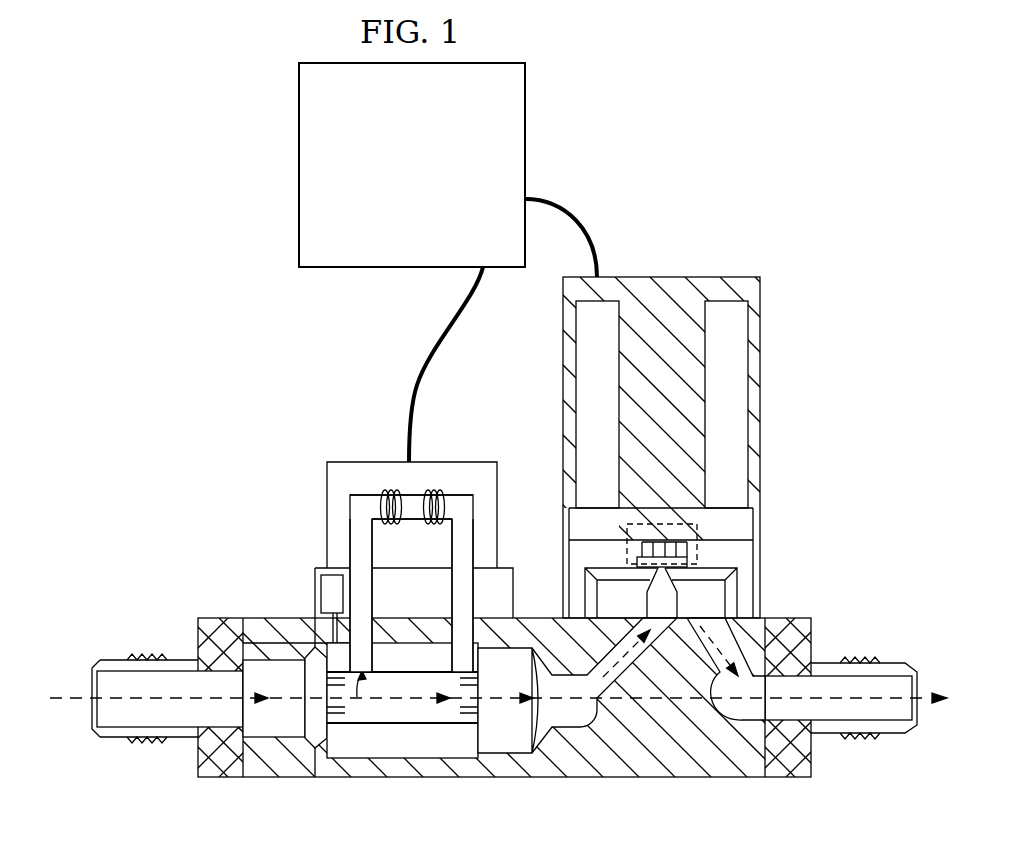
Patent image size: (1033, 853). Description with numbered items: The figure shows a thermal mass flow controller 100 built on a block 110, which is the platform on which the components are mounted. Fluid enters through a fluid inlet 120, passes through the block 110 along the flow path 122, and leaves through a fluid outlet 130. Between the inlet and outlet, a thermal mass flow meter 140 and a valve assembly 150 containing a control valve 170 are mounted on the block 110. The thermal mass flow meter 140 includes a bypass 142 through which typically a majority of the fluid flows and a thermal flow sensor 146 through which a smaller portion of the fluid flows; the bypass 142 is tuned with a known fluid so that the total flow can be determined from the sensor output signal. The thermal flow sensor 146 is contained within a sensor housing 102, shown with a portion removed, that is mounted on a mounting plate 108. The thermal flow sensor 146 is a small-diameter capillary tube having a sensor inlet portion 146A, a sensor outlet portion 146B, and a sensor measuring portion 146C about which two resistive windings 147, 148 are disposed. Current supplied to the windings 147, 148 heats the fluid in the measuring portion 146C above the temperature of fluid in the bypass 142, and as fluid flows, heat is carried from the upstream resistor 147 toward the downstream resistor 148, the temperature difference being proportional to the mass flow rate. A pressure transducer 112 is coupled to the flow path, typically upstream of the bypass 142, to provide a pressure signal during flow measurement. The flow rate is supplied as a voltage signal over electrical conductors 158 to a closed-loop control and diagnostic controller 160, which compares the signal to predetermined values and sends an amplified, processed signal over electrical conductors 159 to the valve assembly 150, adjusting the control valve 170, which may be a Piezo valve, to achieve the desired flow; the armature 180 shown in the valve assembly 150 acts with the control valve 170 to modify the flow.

The thermal mass flow controller 100 is at (772, 147).
The sensor housing 102 is at (326, 548).
The mounting plate 108 is at (315, 594).
The block 110 is at (670, 777).
The pressure transducer 112 is at (330, 585).
The fluid inlet 120 is at (112, 738).
The fluid flow path 122 is at (60, 700).
The fluid outlet 130 is at (897, 733).
The thermal mass flow meter 140 is at (327, 479).
The bypass 142 is at (400, 725).
The thermal flow sensor 146 is at (475, 537).
The sensor inlet portion 146A is at (350, 525).
The sensor outlet portion 146B is at (477, 512).
The sensor measuring portion 146C is at (355, 495).
The upstream resistive winding 147 is at (389, 490).
The downstream resistive winding 148 is at (436, 490).
The valve assembly 150 is at (682, 277).
The electrical conductors 158 is at (420, 372).
The electrical conductors 159 is at (577, 216).
The control and diagnostic controller 160 is at (393, 179).
The control valve 170 is at (687, 548).
The armature 180 is at (697, 523).